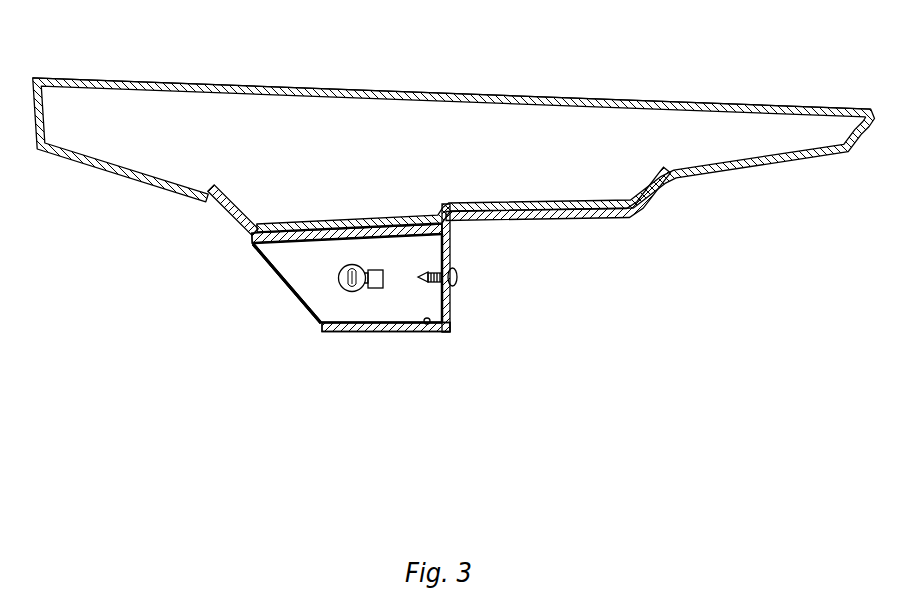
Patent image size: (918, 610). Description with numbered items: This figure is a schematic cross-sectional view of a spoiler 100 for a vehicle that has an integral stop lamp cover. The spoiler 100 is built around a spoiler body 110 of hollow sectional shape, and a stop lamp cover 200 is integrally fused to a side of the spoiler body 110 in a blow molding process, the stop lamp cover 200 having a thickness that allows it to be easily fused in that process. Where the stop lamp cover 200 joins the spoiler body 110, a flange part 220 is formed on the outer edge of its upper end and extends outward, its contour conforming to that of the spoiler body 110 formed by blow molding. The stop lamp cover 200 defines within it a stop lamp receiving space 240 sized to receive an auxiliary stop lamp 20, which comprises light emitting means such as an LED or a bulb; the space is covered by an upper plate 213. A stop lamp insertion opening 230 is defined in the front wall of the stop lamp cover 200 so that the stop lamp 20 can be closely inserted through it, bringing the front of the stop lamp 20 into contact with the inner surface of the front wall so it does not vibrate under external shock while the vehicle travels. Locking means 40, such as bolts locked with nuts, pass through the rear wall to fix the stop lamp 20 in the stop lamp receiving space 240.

The spoiler 100 is at (668, 103).
The spoiler body 110 is at (362, 91).
The flange part 220 is at (217, 216).
The stop lamp cover 200 is at (392, 334).
The upper plate 213 is at (307, 273).
The auxiliary stop lamp 20 is at (272, 283).
The stop lamp insertion opening 230 is at (303, 313).
The stop lamp receiving space 240 is at (418, 333).
The locking means 40 is at (450, 283).